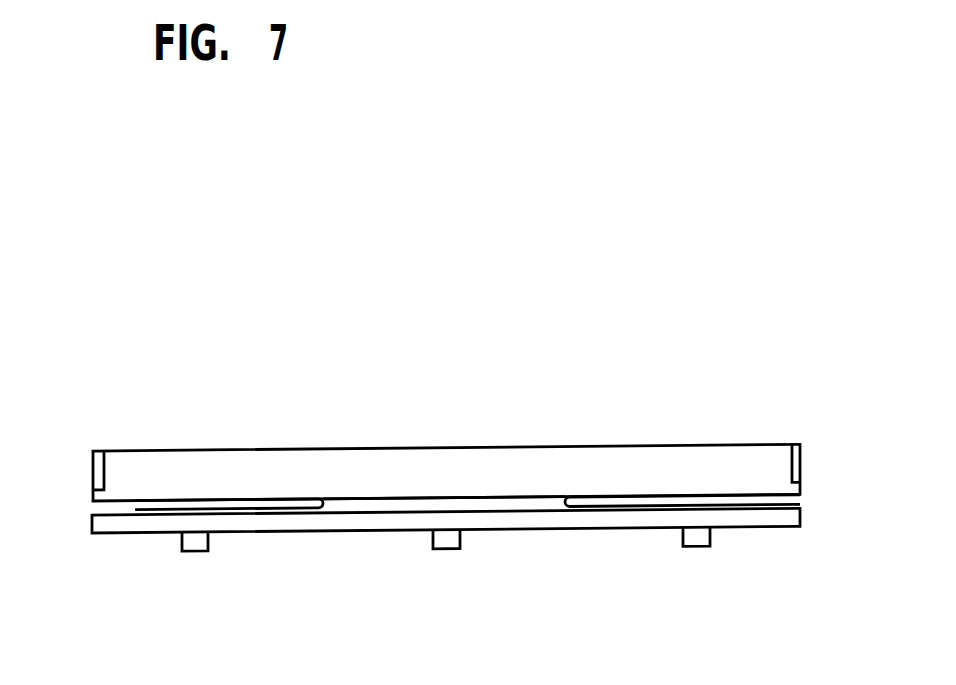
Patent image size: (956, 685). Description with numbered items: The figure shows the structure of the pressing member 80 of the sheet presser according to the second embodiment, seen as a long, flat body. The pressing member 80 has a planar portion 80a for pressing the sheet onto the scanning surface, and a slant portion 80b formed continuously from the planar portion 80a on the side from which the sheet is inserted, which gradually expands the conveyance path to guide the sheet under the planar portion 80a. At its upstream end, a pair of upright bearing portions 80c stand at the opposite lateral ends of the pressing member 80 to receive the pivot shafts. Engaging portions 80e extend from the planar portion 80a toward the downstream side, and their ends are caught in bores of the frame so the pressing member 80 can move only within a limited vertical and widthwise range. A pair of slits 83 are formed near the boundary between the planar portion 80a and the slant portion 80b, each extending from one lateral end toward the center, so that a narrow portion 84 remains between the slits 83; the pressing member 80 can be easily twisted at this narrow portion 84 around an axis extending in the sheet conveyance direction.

The pressing member 80 is at (450, 474).
The planar portion 80a is at (356, 516).
The slant portion 80b is at (317, 470).
The bearing portions 80c is at (97, 472).
The engaging portions 80e is at (198, 547).
The slits 83 is at (138, 507).
The narrow portion 84 is at (500, 503).